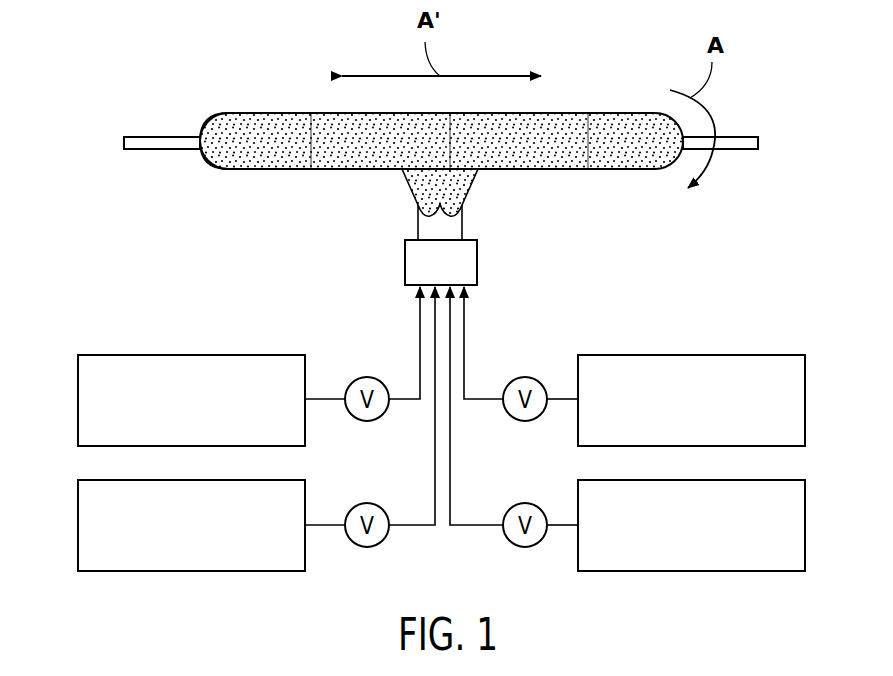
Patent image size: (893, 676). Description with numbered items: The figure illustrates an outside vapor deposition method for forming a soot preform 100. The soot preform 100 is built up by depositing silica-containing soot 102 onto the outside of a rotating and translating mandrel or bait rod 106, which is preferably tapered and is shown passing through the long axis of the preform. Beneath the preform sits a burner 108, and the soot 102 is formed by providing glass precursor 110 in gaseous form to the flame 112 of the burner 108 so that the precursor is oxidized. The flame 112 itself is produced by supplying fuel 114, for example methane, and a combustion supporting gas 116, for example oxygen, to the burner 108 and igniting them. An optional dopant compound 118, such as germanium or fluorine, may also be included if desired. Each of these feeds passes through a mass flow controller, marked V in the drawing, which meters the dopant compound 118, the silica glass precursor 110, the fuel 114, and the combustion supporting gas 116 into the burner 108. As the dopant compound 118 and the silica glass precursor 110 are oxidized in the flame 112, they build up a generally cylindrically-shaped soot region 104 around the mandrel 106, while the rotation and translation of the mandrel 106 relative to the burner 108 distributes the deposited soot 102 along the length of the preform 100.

The soot preform 100 is at (592, 108).
The silica-containing soot 102 is at (465, 188).
The soot region 104 is at (253, 112).
The mandrel or bait rod 106 is at (124, 142).
The burner 108 is at (478, 262).
The glass precursor 110 is at (805, 402).
The flame 112 is at (418, 222).
The fuel 114 is at (78, 400).
The combustion supporting gas 116 is at (78, 528).
The dopant compound 118 is at (805, 522).